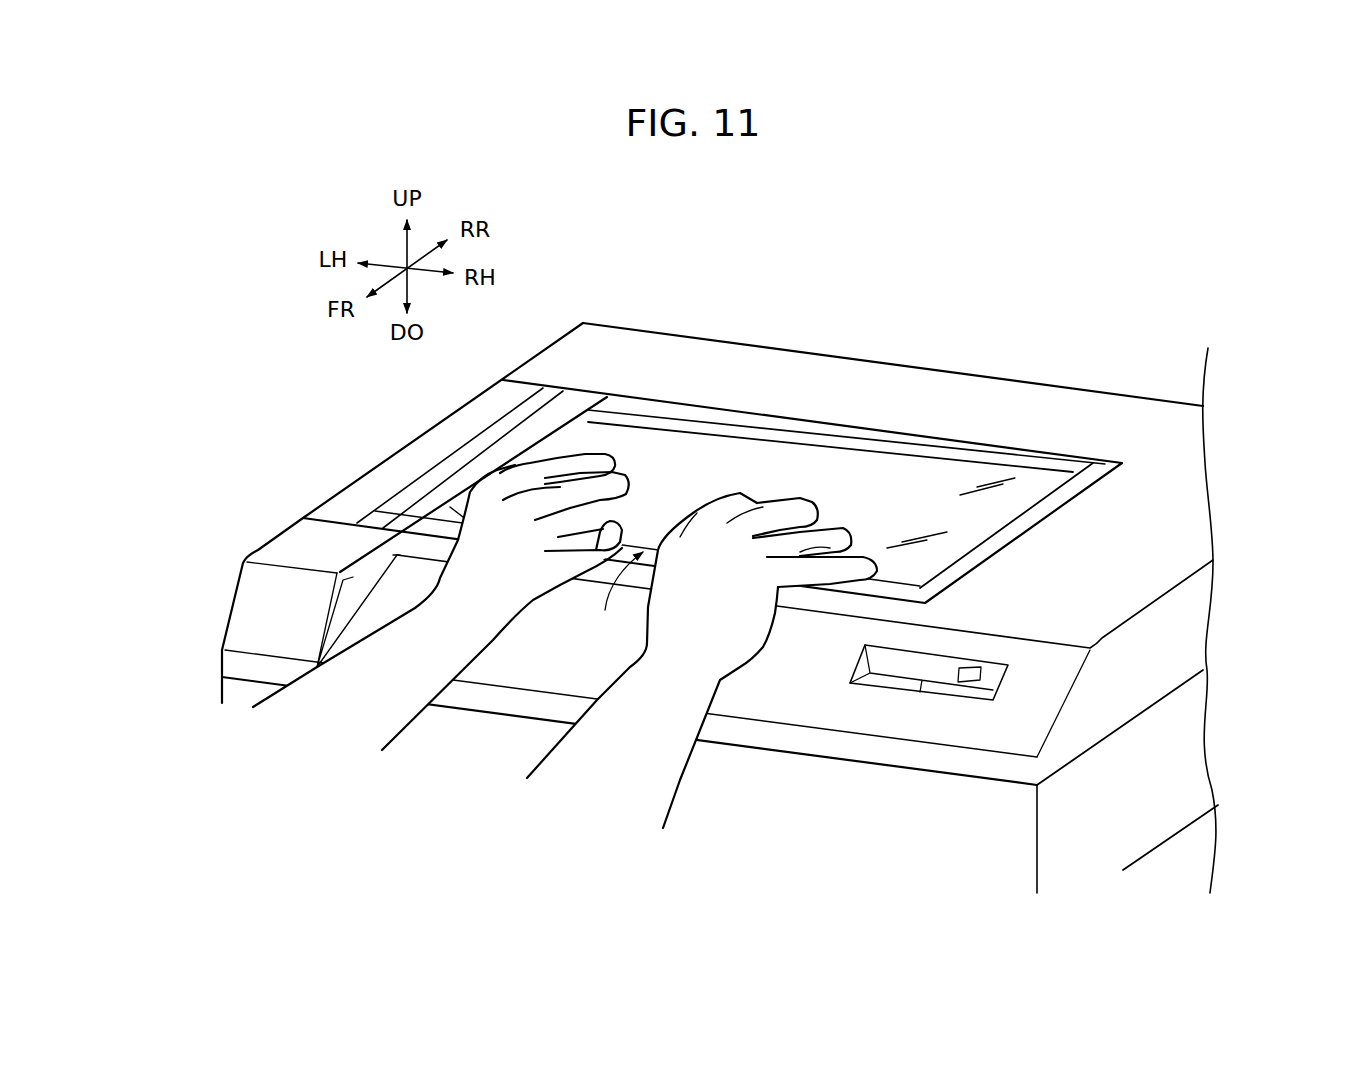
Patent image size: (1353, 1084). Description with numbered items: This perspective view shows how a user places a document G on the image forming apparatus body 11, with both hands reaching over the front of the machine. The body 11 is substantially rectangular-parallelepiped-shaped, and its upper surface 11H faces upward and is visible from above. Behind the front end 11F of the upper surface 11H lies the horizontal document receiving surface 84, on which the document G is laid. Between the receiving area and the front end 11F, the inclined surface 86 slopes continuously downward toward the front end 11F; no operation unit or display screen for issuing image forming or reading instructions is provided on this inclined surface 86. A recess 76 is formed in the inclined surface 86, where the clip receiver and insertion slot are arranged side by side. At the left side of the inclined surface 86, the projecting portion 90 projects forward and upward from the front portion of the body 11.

The image forming apparatus body 11 is at (220, 688).
The front end of the upper surface 11F is at (855, 735).
The upper surface 11H is at (1178, 527).
The recess 76 is at (912, 663).
The document receiving surface 84 is at (985, 515).
The inclined surface 86 is at (960, 733).
The projecting portion 90 is at (245, 552).
The document G is at (923, 473).